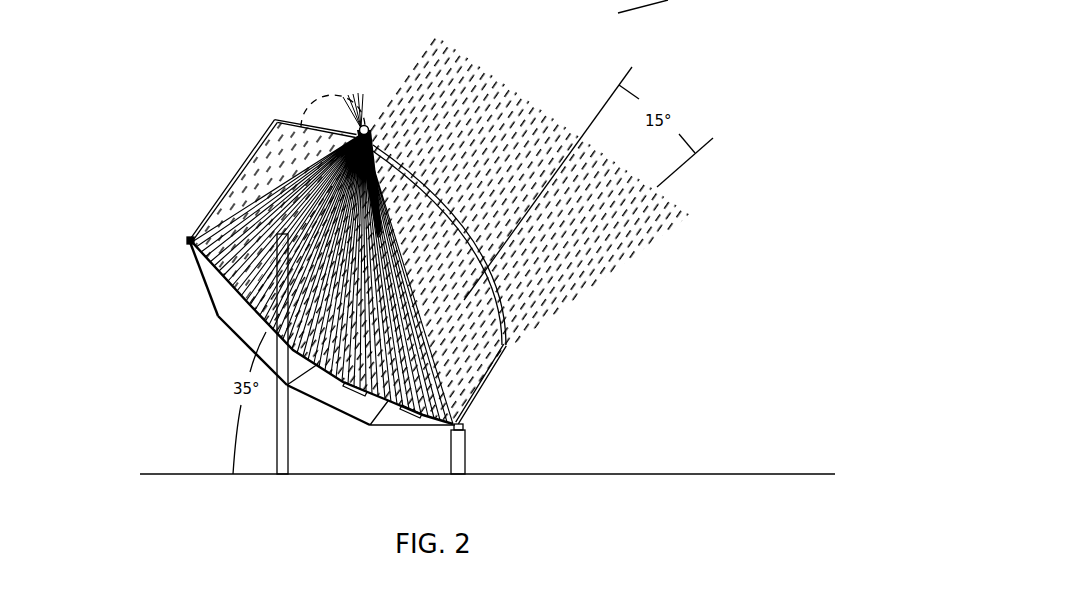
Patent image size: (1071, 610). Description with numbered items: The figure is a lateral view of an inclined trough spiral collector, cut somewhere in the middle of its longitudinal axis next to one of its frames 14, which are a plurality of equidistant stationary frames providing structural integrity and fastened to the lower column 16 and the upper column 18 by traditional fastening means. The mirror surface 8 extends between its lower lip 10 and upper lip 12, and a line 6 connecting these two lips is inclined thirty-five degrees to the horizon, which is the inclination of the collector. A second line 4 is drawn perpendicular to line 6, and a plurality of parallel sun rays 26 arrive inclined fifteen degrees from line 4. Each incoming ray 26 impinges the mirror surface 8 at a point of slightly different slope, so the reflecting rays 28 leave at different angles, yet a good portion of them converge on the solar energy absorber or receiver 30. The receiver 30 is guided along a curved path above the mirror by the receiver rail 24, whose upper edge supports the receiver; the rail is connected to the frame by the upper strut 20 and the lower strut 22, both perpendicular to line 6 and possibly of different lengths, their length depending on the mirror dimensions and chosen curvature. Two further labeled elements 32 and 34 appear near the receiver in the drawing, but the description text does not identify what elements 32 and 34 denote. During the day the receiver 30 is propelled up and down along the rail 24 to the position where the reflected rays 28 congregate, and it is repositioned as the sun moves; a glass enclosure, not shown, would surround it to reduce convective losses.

The line 4 is at (462, 298).
The line 6 is at (468, 410).
The mirror surface 8 is at (190, 240).
The lower lip 10 is at (462, 422).
The upper lip 12 is at (190, 241).
The frames 14 is at (218, 316).
The lower column 16 is at (458, 468).
The upper column 18 is at (222, 327).
The upper strut 20 is at (240, 172).
The lower strut 22 is at (500, 356).
The receiver rail 24 is at (307, 123).
The sun rays 26 is at (658, 247).
The reflecting rays 28 is at (202, 220).
The receiver 30 is at (352, 112).
The receiver top 32 is at (362, 100).
The frame top edge 34 is at (253, 107).